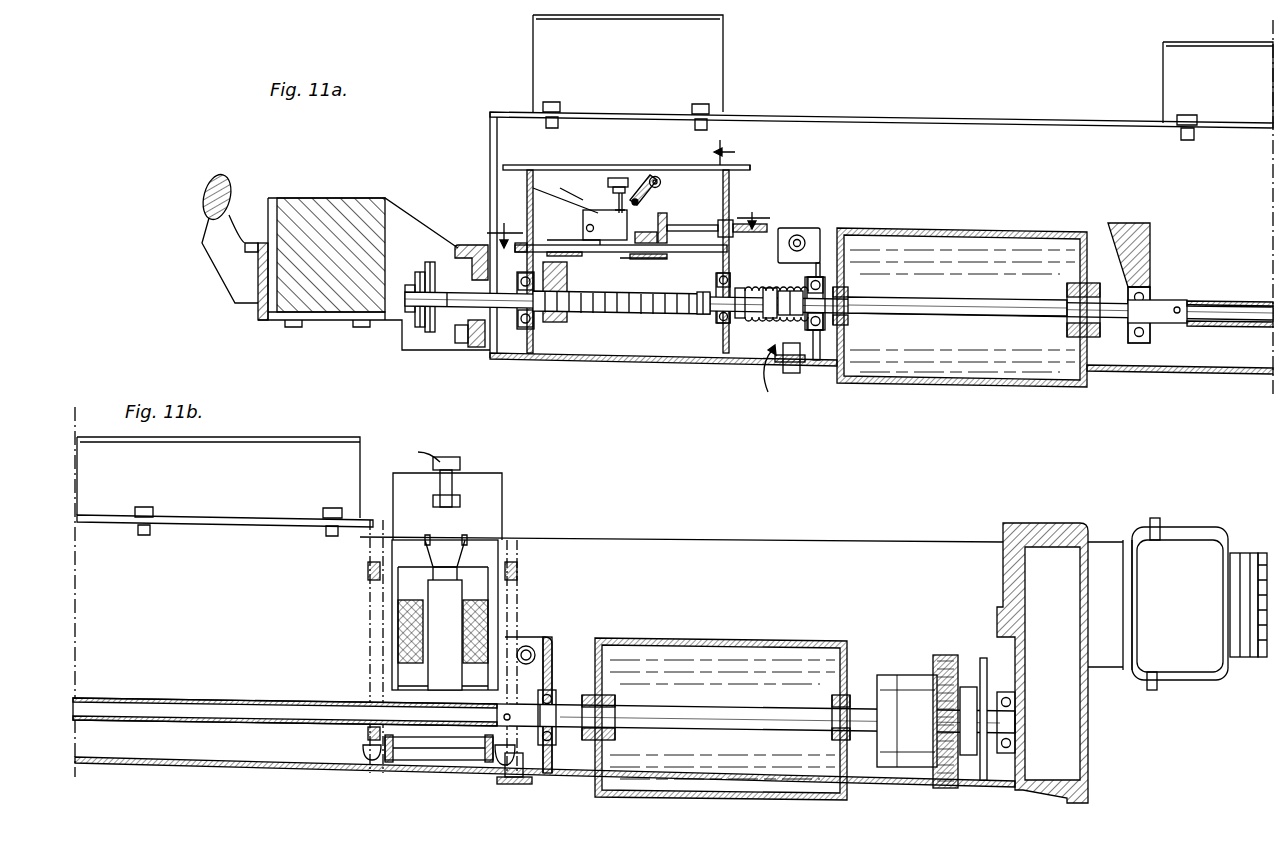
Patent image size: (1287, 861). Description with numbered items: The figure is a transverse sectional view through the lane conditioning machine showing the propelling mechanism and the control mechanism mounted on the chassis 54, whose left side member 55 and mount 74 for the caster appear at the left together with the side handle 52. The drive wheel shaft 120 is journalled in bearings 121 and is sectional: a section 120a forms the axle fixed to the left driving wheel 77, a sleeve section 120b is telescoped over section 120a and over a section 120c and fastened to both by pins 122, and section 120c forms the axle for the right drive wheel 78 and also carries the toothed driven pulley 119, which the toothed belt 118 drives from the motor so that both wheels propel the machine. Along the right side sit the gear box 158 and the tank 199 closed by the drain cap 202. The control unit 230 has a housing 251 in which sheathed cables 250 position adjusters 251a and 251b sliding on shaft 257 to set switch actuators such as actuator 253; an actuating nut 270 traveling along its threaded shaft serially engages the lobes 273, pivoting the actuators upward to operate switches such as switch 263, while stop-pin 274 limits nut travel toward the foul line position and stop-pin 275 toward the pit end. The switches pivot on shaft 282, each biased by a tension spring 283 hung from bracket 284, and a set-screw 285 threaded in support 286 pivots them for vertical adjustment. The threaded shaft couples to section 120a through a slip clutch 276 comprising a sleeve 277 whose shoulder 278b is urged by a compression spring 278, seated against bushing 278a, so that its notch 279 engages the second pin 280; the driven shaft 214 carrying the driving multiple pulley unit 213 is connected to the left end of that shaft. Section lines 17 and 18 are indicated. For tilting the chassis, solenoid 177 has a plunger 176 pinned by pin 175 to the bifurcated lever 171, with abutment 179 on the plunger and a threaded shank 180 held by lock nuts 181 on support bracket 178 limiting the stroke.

In FIG. 11A, the side handle 52 is at (213, 177).
In FIG. 11A, the shock absorbing rubber-like mount 74 is at (336, 210).
In FIG. 11A, the left side member 55 is at (471, 246).
In FIG. 11A, the control unit 230 is at (565, 163).
In FIG. 11A, the housing 251 is at (752, 171).
In FIG. 11A, the shaft 257 is at (697, 255).
In FIG. 11A, the shaft 282 is at (607, 250).
In FIG. 11A, the lobes 273 is at (626, 257).
In FIG. 11A, the sheathed cables 250 is at (712, 225).
In FIG. 11A, the adjuster 251b is at (676, 209).
In FIG. 11A, the adjuster 251a is at (660, 237).
In FIG. 11A, the electric switch 263 is at (598, 198).
In FIG. 11A, the support 286 is at (618, 179).
In FIG. 11A, the bracket 284 is at (646, 178).
In FIG. 11A, the tension spring 283 is at (660, 183).
In FIG. 11A, the set-screw 285 is at (612, 196).
In FIG. 11A, the actuating nut 270 is at (556, 321).
In FIG. 11A, the bearings 121 is at (522, 330).
In FIG. 11B, the bearings 121 is at (556, 743).
In FIG. 11A, the stop-pin 274 is at (533, 334).
In FIG. 11A, the driving multiple pulley unit 213 is at (430, 333).
In FIG. 11A, the driven shaft 214 is at (450, 308).
In FIG. 11A, the drive wheel shaft 120 is at (1231, 325).
In FIG. 11B, the drive wheel shaft 120 is at (284, 694).
In FIG. 11A, the switch actuator 253 is at (612, 315).
In FIG. 11A, the stop-pin 275 is at (700, 316).
In FIG. 11A, the bushing 278a is at (752, 284).
In FIG. 11A, the compression spring 278 is at (760, 287).
In FIG. 11A, the sleeve 277 is at (763, 322).
In FIG. 11A, the notch 279 is at (824, 279).
In FIG. 11A, the shoulder 278b is at (798, 238).
In FIG. 11A, the slip clutch 276 is at (793, 366).
In FIG. 11A, the driving wheel 77 is at (951, 387).
In FIG. 11A, the second pin 280 is at (840, 328).
In FIG. 11A, the shaft section 120a is at (976, 314).
In FIG. 11A, the chassis 54 is at (1120, 377).
In FIG. 11B, the chassis 54 is at (268, 768).
In FIG. 11A, the pins 122 is at (1177, 314).
In FIG. 11B, the pins 122 is at (506, 785).
In FIG. 11A, the sleeve section 120b is at (1232, 303).
In FIG. 11A, the section line 17 is at (629, 219).
In FIG. 11A, the section line 18 is at (745, 268).
In FIG. 11B, the plunger 176 is at (378, 630).
In FIG. 11B, the support bracket 178 is at (496, 472).
In FIG. 11B, the lock nuts 181 is at (430, 455).
In FIG. 11B, the threaded shank 180 is at (454, 492).
In FIG. 11B, the solenoid 177 is at (492, 620).
In FIG. 11B, the abutment 179 is at (445, 568).
In FIG. 11B, the shaft section 120c is at (703, 724).
In FIG. 11B, the pin 175 is at (468, 750).
In FIG. 11B, the bifurcated lever 171 is at (495, 768).
In FIG. 11B, the drive wheel 78 is at (781, 800).
In FIG. 11B, the toothed driven pulley 119 is at (932, 690).
In FIG. 11B, the toothed belt 118 is at (948, 657).
In FIG. 11B, the gear box 158 is at (1062, 525).
In FIG. 11B, the tank 199 is at (1191, 530).
In FIG. 11B, the drain cap 202 is at (1258, 660).